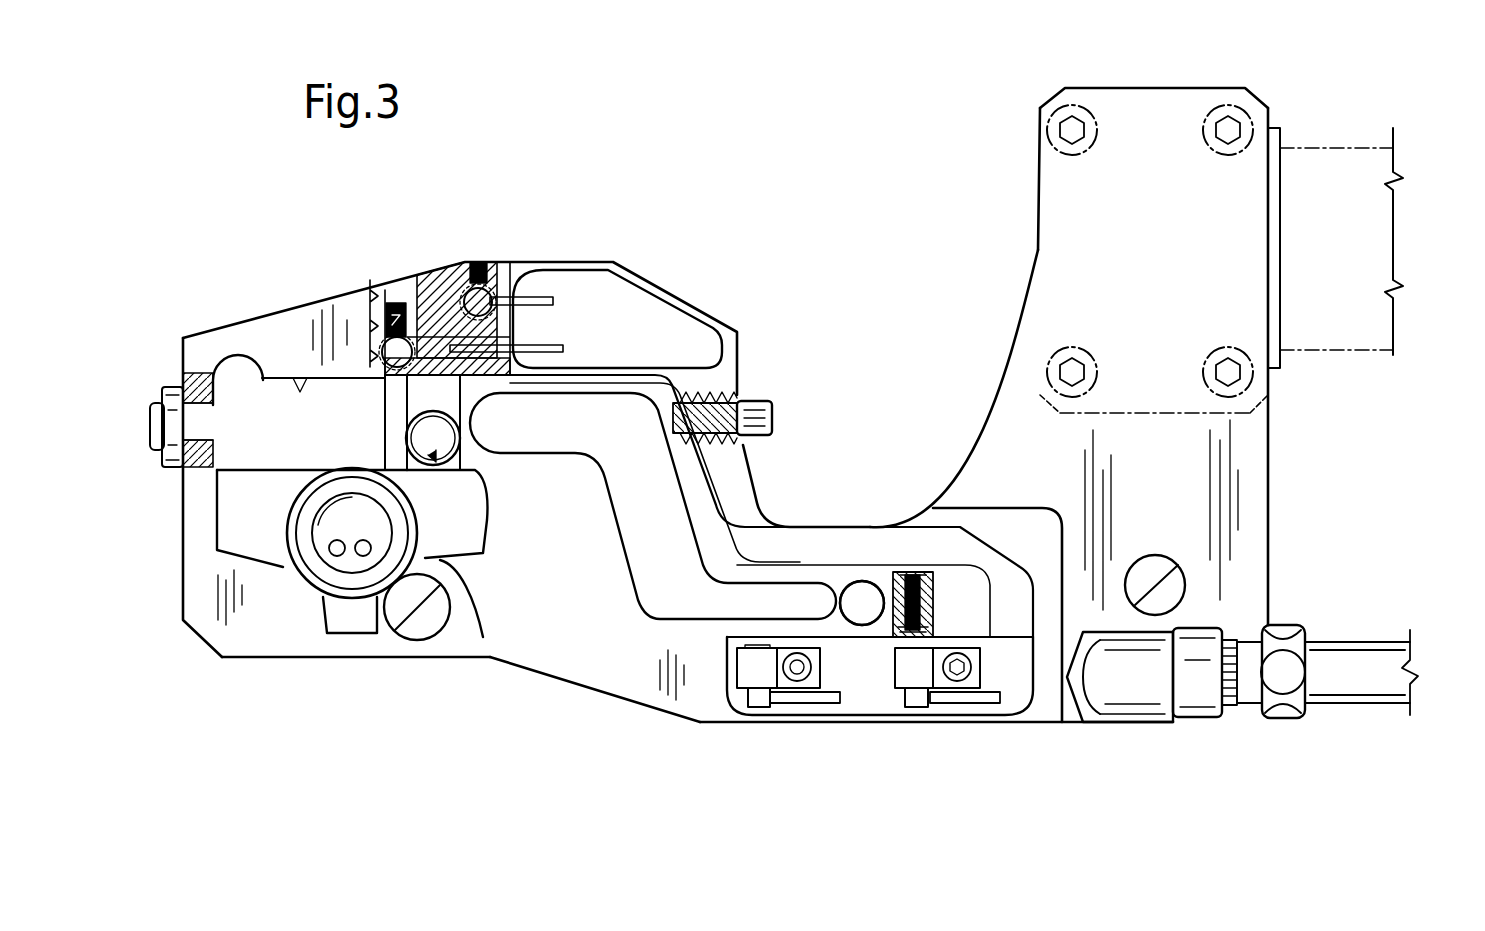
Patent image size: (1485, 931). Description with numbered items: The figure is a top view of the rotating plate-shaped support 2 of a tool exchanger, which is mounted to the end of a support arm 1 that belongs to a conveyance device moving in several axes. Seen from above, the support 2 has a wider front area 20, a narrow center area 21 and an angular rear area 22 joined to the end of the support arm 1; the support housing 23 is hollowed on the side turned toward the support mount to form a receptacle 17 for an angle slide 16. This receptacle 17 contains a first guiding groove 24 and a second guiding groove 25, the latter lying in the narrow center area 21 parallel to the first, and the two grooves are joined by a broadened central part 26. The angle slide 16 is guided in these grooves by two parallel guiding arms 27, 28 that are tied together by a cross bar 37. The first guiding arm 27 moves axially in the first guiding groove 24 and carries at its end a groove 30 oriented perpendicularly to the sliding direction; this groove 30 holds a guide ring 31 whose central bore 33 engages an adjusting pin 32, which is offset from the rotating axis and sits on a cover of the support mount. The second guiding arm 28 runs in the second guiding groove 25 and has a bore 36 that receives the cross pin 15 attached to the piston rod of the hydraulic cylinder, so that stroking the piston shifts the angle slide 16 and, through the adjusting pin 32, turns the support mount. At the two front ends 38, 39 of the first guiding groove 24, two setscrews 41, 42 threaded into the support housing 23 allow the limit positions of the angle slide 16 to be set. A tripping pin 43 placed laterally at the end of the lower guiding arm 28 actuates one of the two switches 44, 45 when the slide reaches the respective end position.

The support arm 1 is at (1370, 247).
The support 2 is at (1165, 105).
The cross pin 15 is at (858, 612).
The angle slide 16 is at (641, 620).
The receptacle 17 is at (504, 613).
The wider front area 20 is at (244, 642).
The narrow center area 21 is at (1033, 712).
The support bracket 22 is at (1255, 553).
The support housing 23 is at (447, 275).
The first guiding groove 24 is at (293, 390).
The second guiding groove 25 is at (957, 580).
The broadened central part 26 is at (567, 510).
The guiding arm 27 is at (568, 385).
The second guiding arm 28 is at (805, 630).
The groove 30 is at (418, 367).
The guide ring 31 is at (435, 433).
The adjusting pin 32 is at (493, 432).
The central bore 33 is at (431, 467).
The bore 36 is at (864, 583).
The cross bar 37 is at (690, 523).
The front end 38 is at (238, 400).
The front end 39 is at (675, 400).
The setscrew 41 is at (155, 440).
The setscrew 42 is at (770, 400).
The tripping pin 43 is at (953, 662).
The switch 44 is at (752, 675).
The switch 45 is at (908, 660).